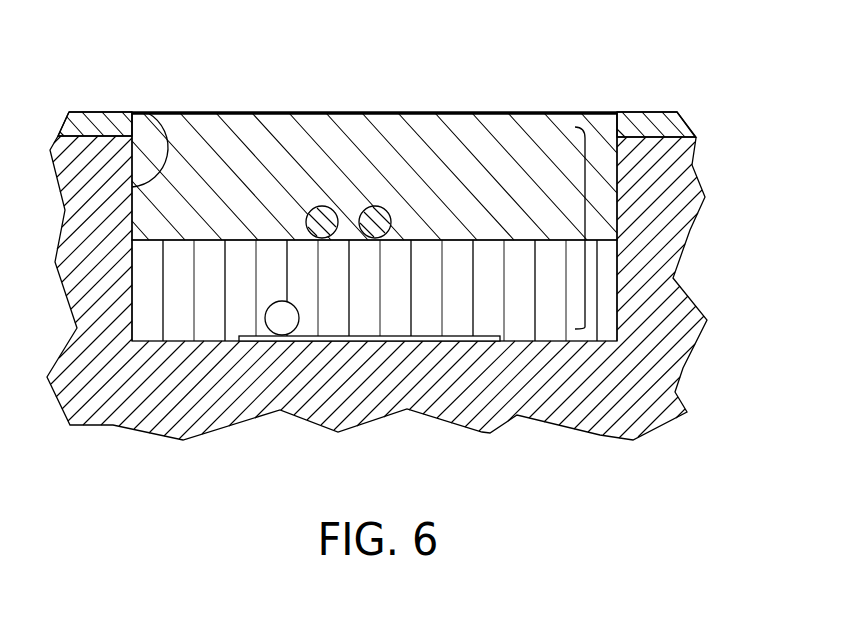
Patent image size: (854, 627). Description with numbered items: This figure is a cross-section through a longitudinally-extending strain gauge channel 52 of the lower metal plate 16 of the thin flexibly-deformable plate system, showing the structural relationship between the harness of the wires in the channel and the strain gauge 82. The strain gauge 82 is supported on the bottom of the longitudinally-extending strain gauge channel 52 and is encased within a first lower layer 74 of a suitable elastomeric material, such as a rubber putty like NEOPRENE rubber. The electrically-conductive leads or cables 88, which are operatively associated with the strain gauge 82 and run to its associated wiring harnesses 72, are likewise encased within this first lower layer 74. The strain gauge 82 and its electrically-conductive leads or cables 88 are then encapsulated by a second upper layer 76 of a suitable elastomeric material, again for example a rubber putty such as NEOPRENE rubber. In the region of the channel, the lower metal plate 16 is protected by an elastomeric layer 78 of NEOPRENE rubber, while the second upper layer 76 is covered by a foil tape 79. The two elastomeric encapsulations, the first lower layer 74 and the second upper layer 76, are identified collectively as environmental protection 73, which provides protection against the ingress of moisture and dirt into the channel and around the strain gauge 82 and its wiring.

The lower metal plate 16 is at (660, 330).
The longitudinally-extending strain gauge channel 52 is at (163, 113).
The wiring harness 72 is at (325, 206).
The environmental protection 73 is at (588, 233).
The first lower layer 74 is at (484, 311).
The second upper layer 76 is at (484, 191).
The elastomeric layer 78 is at (112, 113).
The foil tape 79 is at (270, 112).
The strain gauge 82 is at (462, 340).
The electrically-conductive leads or cables 88 is at (275, 322).